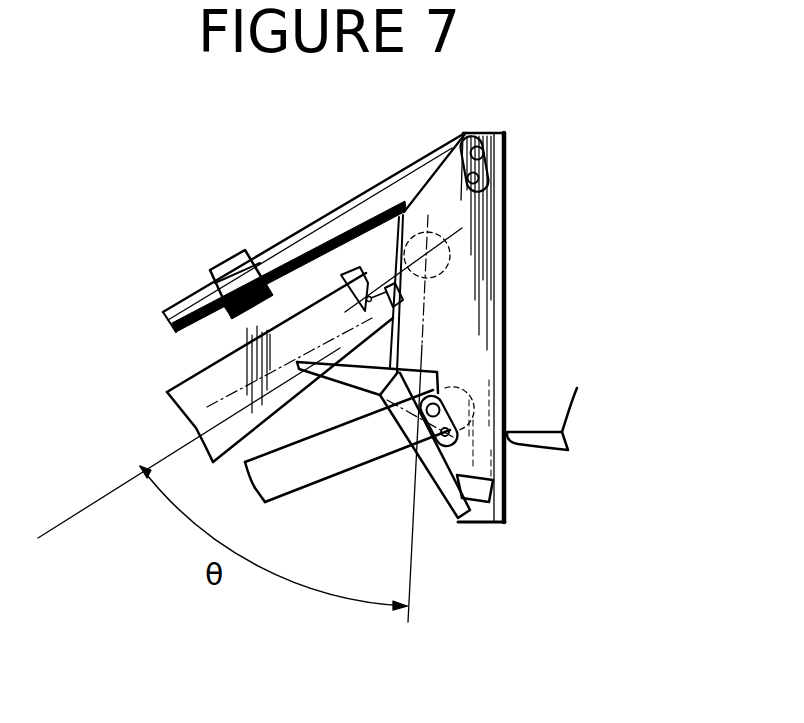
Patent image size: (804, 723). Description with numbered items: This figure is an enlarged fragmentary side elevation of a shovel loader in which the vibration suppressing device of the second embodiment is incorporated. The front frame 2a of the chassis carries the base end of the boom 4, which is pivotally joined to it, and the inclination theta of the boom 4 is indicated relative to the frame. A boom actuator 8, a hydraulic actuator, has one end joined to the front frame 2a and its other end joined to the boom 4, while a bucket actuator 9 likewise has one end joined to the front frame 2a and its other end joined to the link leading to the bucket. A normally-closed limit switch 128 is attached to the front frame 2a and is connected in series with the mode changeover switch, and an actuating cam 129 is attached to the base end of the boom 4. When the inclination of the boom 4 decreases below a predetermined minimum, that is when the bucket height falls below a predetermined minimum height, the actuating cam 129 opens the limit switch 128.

The front frame 2a is at (494, 262).
The bucket actuator 9 is at (360, 203).
The actuating cam 129 is at (337, 292).
The limit switch 128 is at (400, 306).
The boom 4 is at (182, 380).
The boom actuator 8 is at (373, 463).